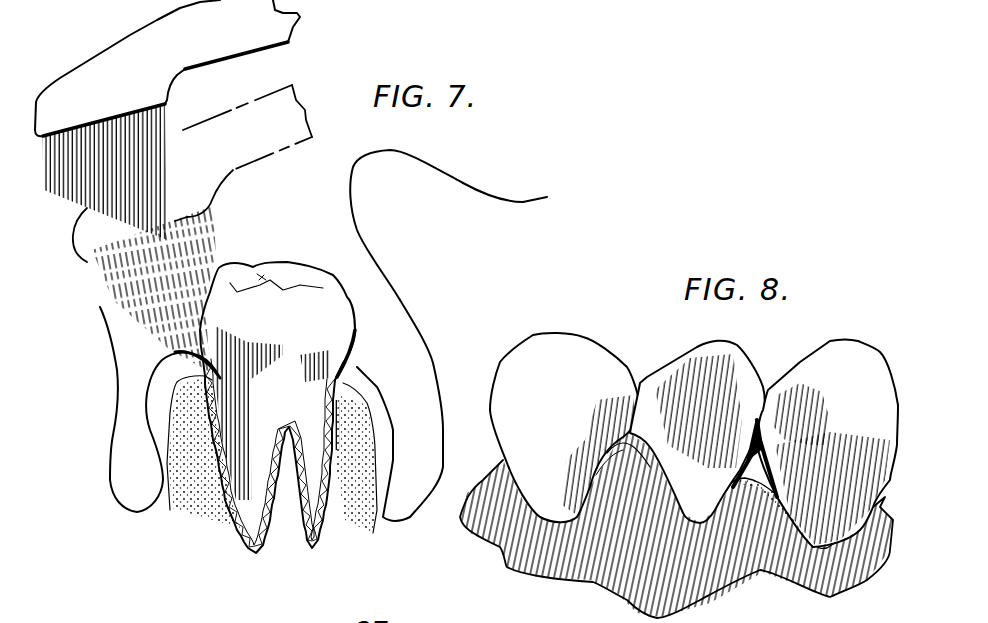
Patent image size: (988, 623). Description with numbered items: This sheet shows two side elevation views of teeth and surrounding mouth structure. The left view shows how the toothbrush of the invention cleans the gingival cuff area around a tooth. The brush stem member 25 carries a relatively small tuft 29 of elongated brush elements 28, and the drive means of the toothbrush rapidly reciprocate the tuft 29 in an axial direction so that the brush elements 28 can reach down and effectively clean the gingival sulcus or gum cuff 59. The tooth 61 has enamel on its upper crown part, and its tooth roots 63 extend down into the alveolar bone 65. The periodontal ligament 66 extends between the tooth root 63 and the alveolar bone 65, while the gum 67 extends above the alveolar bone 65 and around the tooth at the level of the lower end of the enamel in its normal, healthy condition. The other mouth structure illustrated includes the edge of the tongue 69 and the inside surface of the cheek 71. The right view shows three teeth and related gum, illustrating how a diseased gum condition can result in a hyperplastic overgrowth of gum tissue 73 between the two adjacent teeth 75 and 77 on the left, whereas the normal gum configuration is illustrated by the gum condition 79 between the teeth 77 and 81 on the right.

In FIG. 7, the brush stem member 25 is at (90, 65).
In FIG. 7, the tuft 29 is at (85, 185).
In FIG. 7, the brush elements 28 is at (166, 342).
In FIG. 7, the gingival sulcus or gum cuff 59 is at (212, 375).
In FIG. 7, the tooth 61 is at (302, 273).
In FIG. 7, the tooth roots 63 is at (247, 510).
In FIG. 7, the alveolar bone 65 is at (367, 522).
In FIG. 7, the periodontal ligament 66 is at (223, 493).
In FIG. 7, the gum 67 is at (173, 373).
In FIG. 7, the tongue 69 is at (417, 175).
In FIG. 7, the cheek 71 is at (122, 388).
In FIG. 8, the gum tissue 73 is at (620, 443).
In FIG. 8, the tooth 75 is at (565, 345).
In FIG. 8, the tooth 77 is at (697, 352).
In FIG. 8, the gum condition 79 is at (747, 463).
In FIG. 8, the tooth 81 is at (810, 367).